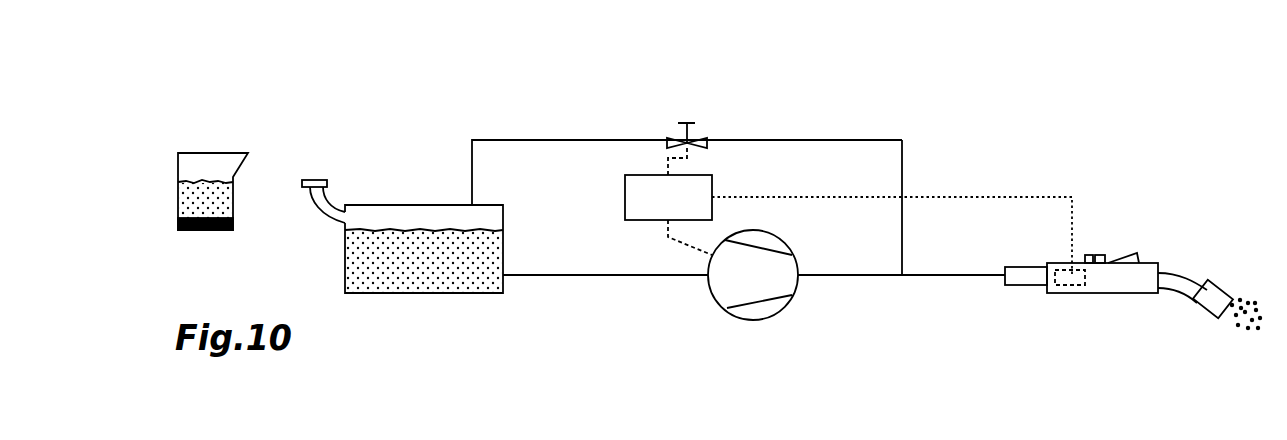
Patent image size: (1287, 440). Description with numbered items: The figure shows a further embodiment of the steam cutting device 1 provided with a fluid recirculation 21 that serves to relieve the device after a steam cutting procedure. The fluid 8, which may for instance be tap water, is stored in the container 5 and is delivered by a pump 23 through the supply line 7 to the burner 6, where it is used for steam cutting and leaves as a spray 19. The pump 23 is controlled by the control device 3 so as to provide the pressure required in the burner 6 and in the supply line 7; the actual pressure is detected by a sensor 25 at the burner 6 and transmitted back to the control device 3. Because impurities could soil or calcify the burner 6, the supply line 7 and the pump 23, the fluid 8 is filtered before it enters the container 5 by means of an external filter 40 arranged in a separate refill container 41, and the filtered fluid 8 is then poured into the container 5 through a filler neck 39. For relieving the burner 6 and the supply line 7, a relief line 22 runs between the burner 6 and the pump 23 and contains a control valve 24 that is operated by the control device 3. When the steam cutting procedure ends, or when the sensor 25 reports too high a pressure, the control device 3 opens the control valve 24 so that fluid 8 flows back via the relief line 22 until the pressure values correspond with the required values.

The steam cutting device 1 is at (422, 110).
The control device 3 is at (695, 192).
The container 5 is at (368, 313).
The burner 6 is at (1058, 312).
The supply line 7 is at (615, 275).
The fluid 8 is at (213, 200).
The sprayed coating material 19 is at (1250, 288).
The fluid recirculation 21 is at (335, 127).
The relief line 22 is at (903, 170).
The pump 23 is at (750, 275).
The control valve 24 is at (665, 123).
The sensor 25 is at (1078, 285).
The filler neck 39 is at (317, 205).
The external filter 40 is at (178, 222).
The refill container 41 is at (168, 147).